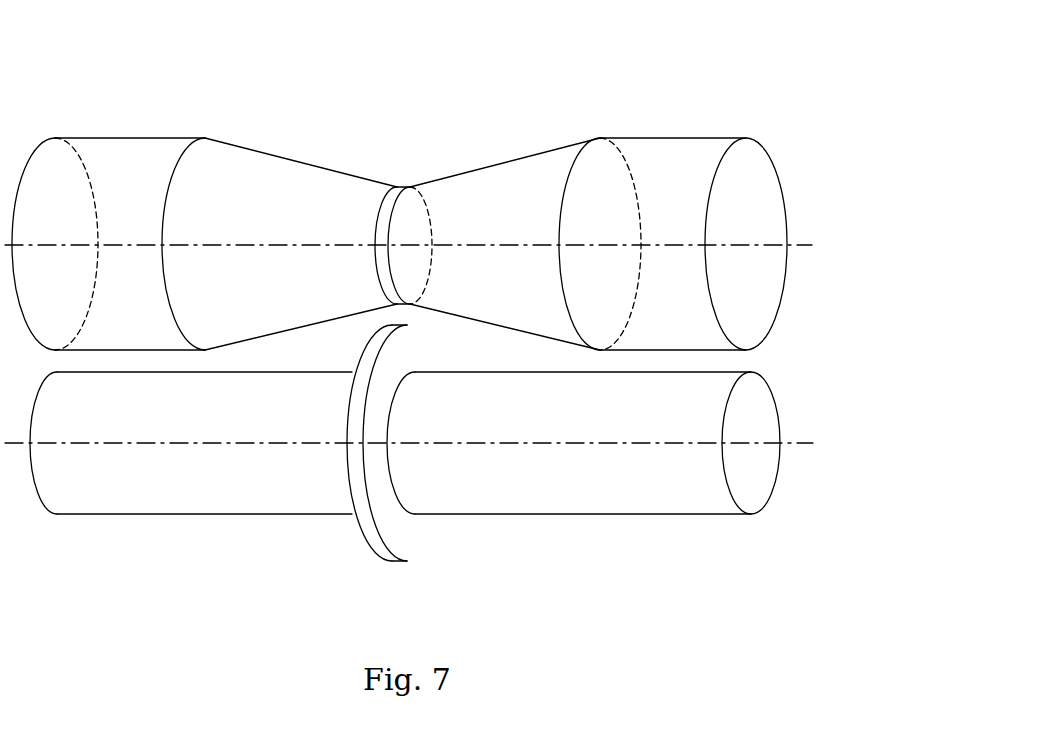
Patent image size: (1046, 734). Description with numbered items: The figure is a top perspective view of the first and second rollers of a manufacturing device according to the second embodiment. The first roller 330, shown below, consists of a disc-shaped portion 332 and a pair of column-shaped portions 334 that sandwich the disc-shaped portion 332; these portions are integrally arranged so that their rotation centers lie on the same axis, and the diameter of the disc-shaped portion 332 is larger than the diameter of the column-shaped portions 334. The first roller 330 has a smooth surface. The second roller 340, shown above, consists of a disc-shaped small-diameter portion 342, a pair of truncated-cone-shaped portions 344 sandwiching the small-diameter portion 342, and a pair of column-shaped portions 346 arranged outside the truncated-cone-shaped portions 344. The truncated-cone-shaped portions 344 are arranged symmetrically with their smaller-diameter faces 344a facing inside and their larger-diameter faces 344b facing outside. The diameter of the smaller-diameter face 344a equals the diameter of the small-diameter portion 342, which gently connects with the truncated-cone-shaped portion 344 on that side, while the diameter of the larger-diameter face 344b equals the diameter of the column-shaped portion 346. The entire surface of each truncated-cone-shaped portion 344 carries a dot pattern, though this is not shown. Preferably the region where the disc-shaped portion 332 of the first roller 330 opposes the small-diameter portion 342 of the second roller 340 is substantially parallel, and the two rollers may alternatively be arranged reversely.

The first roller 330 is at (695, 621).
The disc-shaped portion 332 is at (393, 558).
The column-shaped portions 334 is at (183, 503).
The second roller 340 is at (697, 63).
The small-diameter portion 342 is at (400, 188).
The truncated-cone-shaped portions 344 is at (250, 172).
The smaller-diameter face 344a is at (417, 227).
The larger-diameter face 344b is at (607, 163).
The column-shaped portions 346 is at (127, 158).